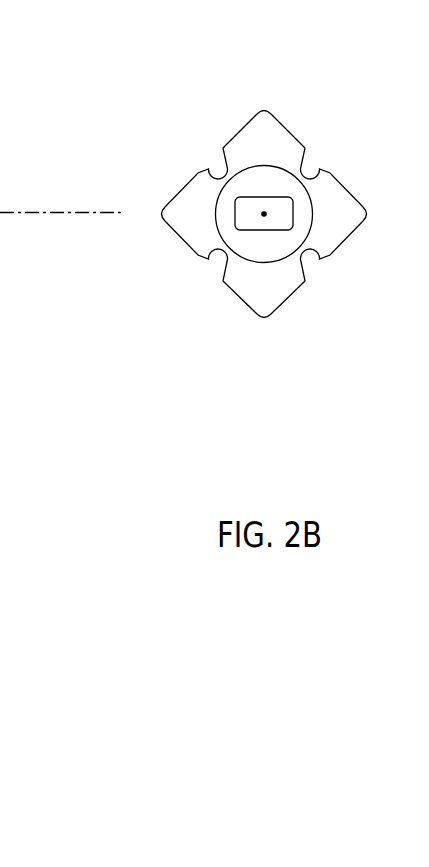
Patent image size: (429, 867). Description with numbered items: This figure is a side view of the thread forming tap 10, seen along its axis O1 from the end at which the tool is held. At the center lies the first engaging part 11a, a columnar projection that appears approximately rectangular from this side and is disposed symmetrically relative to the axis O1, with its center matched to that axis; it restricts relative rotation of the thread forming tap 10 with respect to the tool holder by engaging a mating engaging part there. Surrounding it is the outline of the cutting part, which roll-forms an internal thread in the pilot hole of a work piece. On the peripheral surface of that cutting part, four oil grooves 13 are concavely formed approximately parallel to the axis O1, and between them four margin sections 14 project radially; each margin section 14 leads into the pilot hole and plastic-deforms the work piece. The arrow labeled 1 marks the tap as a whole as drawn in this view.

The light emitting device 1 is at (256, 239).
The thread forming tap 10 is at (225, 239).
The first engaging part 11a is at (285, 212).
The oil groove 13 is at (223, 166).
The margin section 14 is at (225, 214).
The axis O1 is at (265, 211).